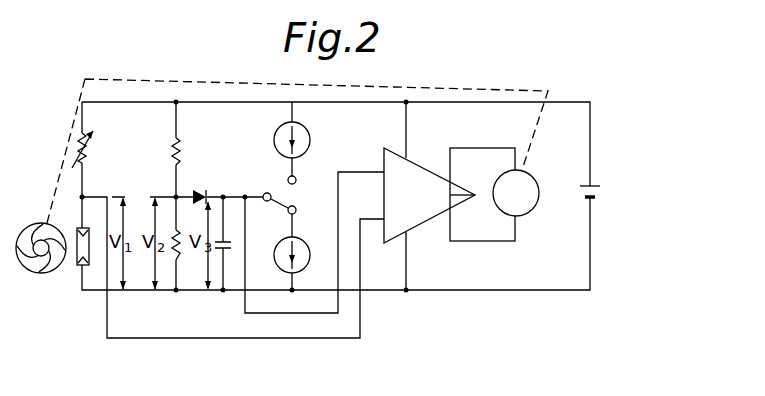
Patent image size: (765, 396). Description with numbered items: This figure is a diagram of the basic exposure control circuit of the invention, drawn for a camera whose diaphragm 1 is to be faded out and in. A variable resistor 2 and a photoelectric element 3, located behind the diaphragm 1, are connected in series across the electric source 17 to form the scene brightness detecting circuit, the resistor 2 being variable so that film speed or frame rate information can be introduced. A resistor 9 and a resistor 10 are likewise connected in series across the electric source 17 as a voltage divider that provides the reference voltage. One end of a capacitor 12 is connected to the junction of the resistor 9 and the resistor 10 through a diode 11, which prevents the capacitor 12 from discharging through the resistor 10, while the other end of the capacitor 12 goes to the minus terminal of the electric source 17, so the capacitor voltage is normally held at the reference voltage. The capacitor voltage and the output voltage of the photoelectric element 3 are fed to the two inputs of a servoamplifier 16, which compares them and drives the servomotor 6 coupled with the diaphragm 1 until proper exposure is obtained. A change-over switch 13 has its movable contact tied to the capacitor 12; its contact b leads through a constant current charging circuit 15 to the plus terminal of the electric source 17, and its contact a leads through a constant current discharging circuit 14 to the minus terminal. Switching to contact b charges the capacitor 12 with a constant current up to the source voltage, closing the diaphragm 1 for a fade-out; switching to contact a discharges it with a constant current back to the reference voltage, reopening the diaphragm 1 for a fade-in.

The diaphragm 1 is at (22, 262).
The resistor 2 is at (90, 152).
The photoelectric element 3 is at (77, 270).
The servomotor 6 is at (531, 186).
The resistor 9 is at (181, 150).
The resistor 10 is at (181, 250).
The diode 11 is at (203, 189).
The capacitor 12 is at (231, 250).
The change-over switch 13 is at (266, 193).
The constant current discharging circuit 14 is at (306, 253).
The constant current charging circuit 15 is at (308, 135).
The servoamplifier 16 is at (414, 216).
The electric source 17 is at (597, 199).